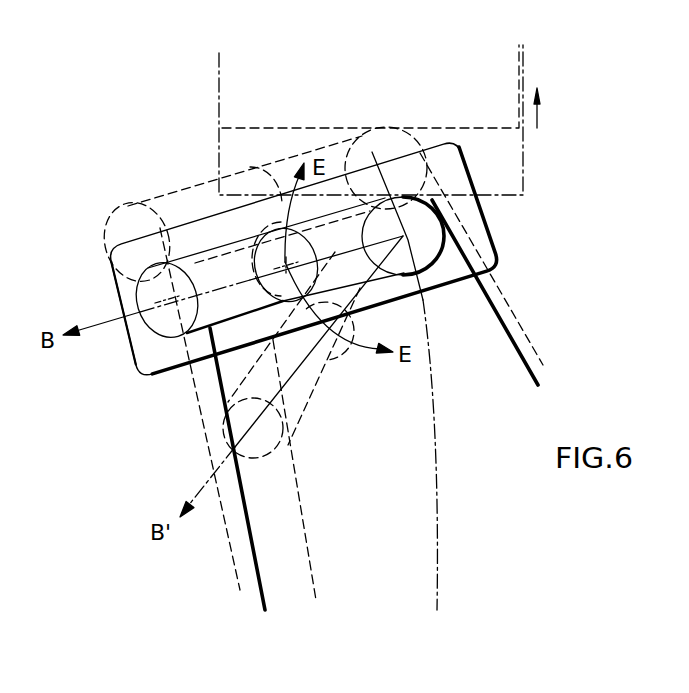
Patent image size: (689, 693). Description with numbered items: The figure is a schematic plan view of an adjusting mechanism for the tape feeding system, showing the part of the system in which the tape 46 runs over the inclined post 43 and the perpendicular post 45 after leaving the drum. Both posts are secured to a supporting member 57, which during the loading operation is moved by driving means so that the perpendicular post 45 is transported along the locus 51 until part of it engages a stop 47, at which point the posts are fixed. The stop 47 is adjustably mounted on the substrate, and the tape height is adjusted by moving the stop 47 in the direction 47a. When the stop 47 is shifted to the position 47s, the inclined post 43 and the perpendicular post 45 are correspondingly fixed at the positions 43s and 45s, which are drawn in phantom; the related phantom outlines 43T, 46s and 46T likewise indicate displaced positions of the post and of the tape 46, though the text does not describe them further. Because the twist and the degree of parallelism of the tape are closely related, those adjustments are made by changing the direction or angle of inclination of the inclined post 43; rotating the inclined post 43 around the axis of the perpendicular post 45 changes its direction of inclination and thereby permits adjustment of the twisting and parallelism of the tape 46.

The inclined post 43 is at (162, 322).
The position of inclined post 43s is at (124, 227).
The phantom position of strut 43T is at (318, 378).
The perpendicular post 45 is at (423, 241).
The position of perpendicular post 45s is at (391, 147).
The tape 46 is at (258, 576).
The phantom position of strut 46s is at (226, 536).
The phantom position of strut 46T is at (303, 513).
The stop 47 is at (514, 162).
The position of stop 47s is at (506, 75).
The direction of stop movement 47a is at (541, 114).
The locus 51 is at (441, 492).
The supporting member 57 is at (448, 272).